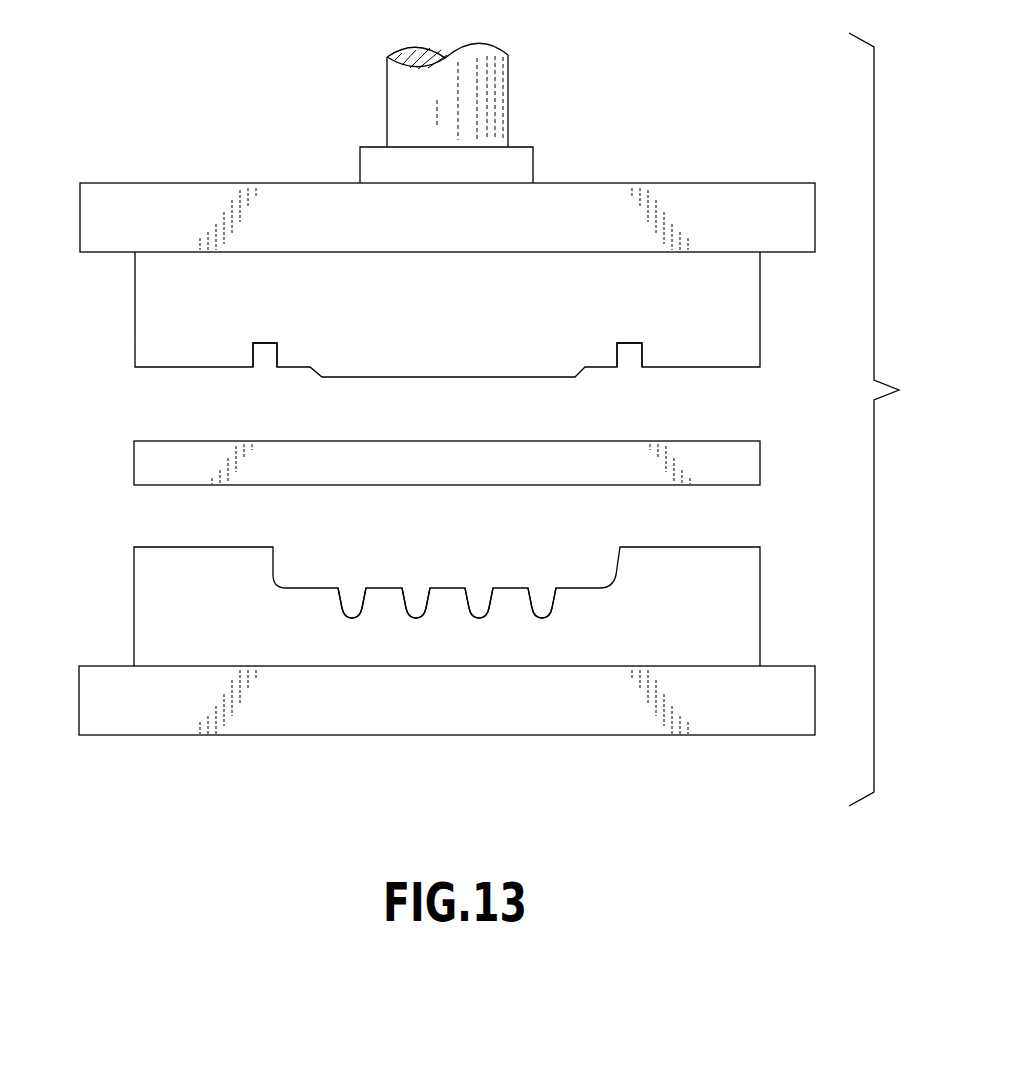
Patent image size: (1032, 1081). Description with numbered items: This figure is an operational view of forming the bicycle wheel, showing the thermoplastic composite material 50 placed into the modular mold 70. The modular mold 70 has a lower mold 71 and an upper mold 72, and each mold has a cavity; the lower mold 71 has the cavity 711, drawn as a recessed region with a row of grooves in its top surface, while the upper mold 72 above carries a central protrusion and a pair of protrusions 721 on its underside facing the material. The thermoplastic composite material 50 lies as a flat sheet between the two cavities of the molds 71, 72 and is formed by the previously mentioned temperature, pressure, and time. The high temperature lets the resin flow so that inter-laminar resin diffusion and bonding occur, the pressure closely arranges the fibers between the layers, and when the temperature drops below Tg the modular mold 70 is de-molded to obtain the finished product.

The modular mold 70 is at (352, 746).
The upper mold 72 is at (665, 200).
The protrusions 721 is at (642, 368).
The thermoplastic composite material 50 is at (126, 464).
The lower mold 71 is at (480, 722).
The cavity 711 is at (560, 588).